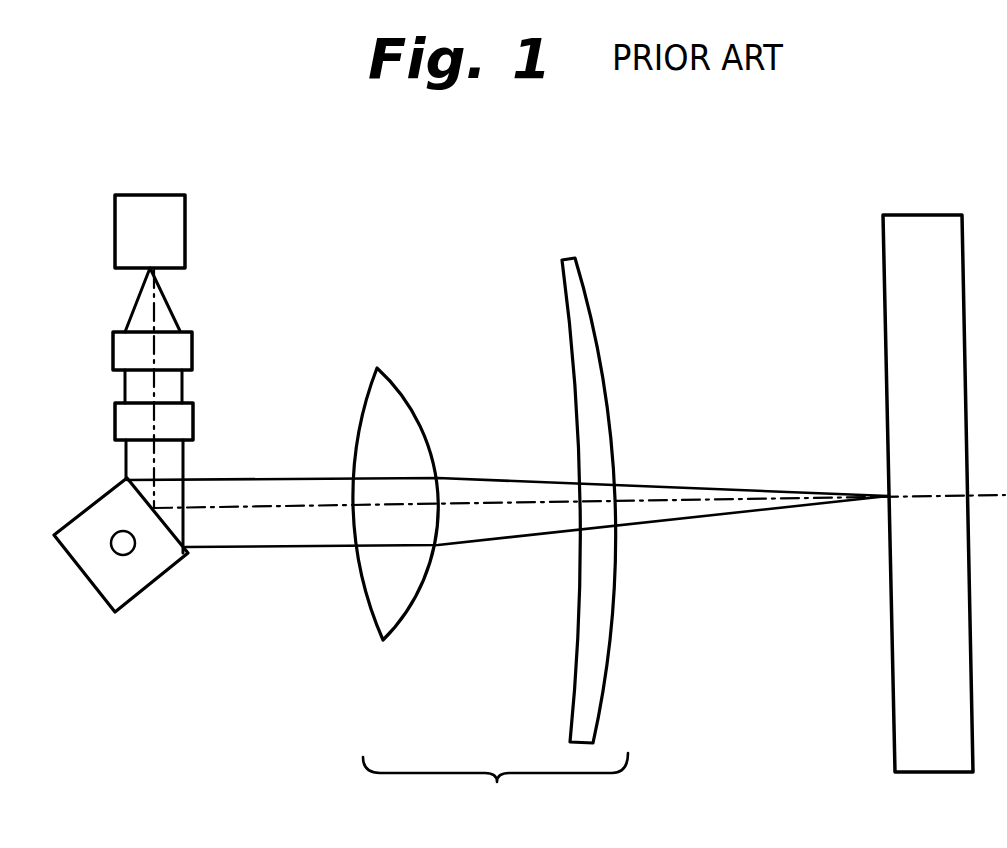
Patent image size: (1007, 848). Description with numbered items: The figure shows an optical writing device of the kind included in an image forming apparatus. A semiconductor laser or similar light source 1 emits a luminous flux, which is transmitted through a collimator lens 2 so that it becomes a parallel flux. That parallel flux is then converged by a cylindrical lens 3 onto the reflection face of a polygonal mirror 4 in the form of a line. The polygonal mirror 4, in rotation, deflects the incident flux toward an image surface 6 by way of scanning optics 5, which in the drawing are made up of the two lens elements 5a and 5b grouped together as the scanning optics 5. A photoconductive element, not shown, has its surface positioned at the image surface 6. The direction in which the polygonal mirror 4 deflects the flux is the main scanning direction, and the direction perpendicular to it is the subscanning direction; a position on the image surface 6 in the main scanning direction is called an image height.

The light source 1 is at (186, 228).
The collimator lens 2 is at (192, 352).
The cylindrical lens 3 is at (194, 422).
The polygonal mirror 4 is at (128, 585).
The scanning optics 5 is at (495, 789).
The biconvex lens element 5a is at (413, 617).
The meniscus lens element 5b is at (615, 643).
The image surface 6 is at (905, 683).